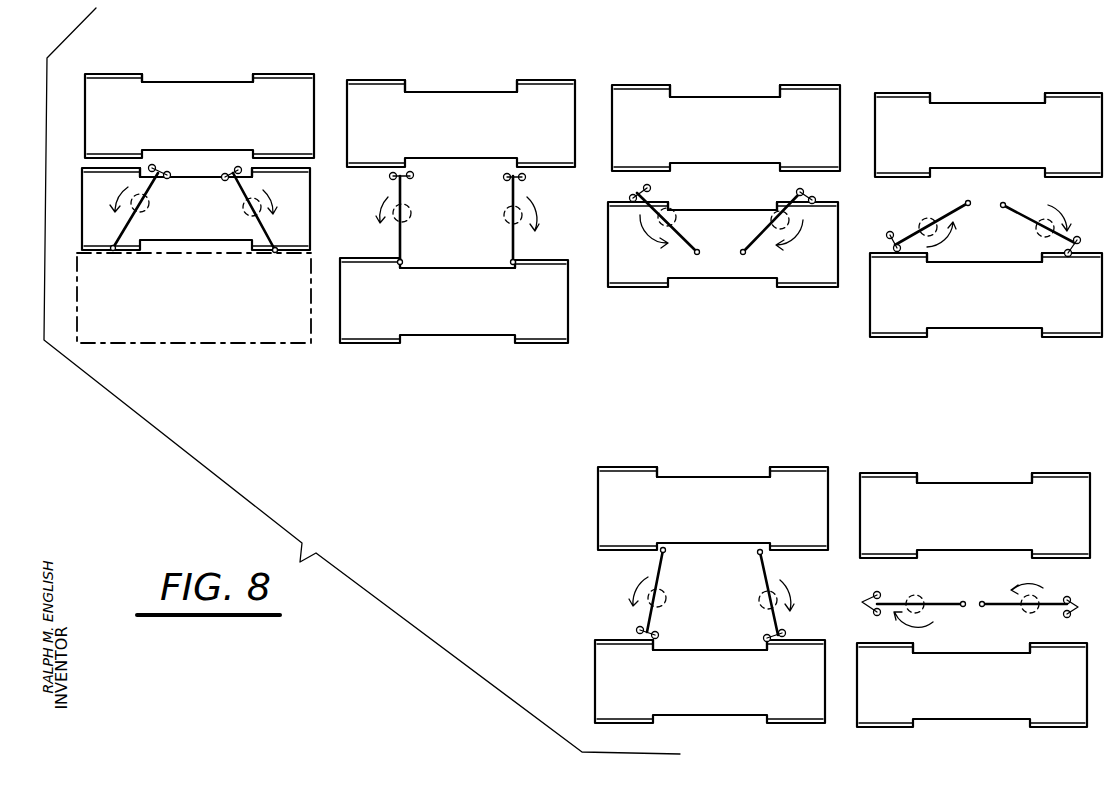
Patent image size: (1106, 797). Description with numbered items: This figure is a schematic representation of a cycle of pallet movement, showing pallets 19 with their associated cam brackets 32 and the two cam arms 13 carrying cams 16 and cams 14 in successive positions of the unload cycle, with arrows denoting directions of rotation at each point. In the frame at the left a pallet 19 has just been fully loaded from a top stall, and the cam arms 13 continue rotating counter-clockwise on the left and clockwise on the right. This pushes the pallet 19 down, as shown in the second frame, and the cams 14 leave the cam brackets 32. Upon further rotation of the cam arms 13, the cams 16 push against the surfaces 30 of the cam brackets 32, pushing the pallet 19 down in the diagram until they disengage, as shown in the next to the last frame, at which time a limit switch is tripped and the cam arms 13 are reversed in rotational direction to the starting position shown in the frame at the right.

The cam arm 13 is at (147, 192).
The cam 14 is at (275, 249).
The cam 16 is at (160, 174).
The pallet 19 is at (213, 88).
The surface 30 is at (148, 74).
The cam bracket 32 is at (143, 76).